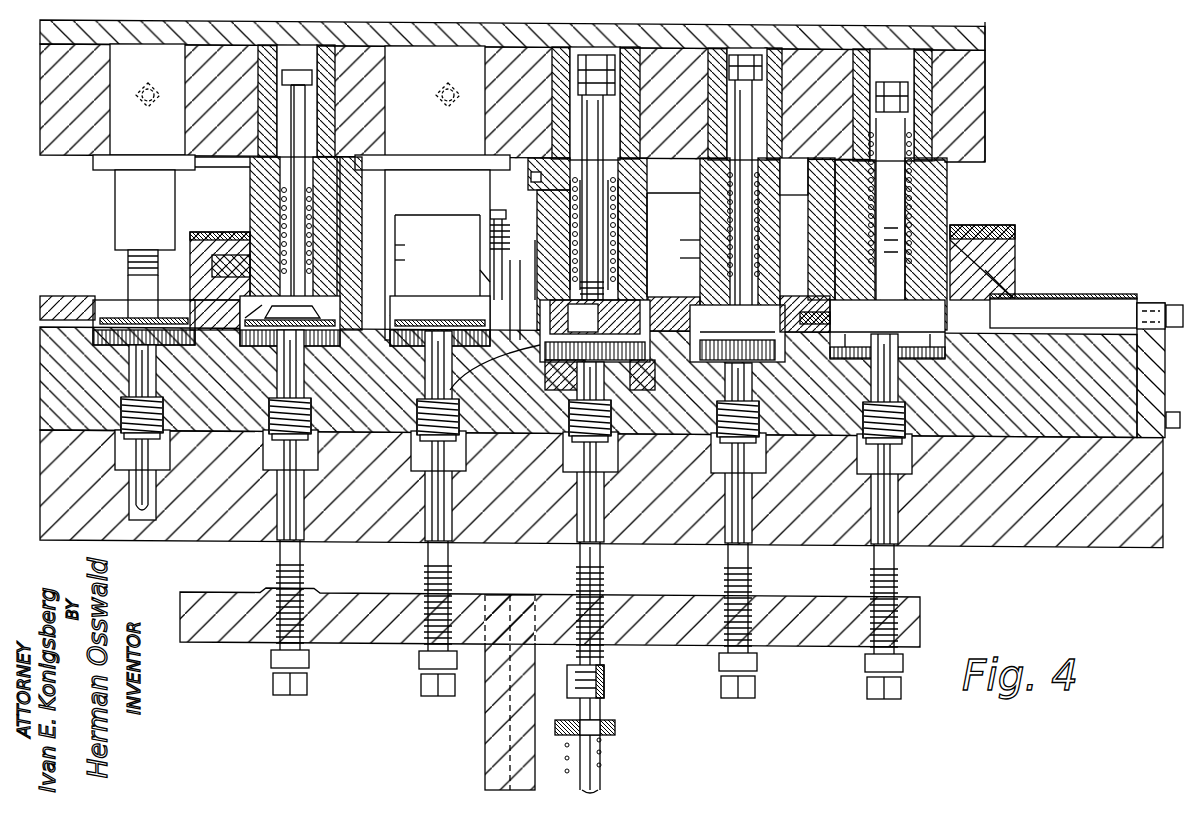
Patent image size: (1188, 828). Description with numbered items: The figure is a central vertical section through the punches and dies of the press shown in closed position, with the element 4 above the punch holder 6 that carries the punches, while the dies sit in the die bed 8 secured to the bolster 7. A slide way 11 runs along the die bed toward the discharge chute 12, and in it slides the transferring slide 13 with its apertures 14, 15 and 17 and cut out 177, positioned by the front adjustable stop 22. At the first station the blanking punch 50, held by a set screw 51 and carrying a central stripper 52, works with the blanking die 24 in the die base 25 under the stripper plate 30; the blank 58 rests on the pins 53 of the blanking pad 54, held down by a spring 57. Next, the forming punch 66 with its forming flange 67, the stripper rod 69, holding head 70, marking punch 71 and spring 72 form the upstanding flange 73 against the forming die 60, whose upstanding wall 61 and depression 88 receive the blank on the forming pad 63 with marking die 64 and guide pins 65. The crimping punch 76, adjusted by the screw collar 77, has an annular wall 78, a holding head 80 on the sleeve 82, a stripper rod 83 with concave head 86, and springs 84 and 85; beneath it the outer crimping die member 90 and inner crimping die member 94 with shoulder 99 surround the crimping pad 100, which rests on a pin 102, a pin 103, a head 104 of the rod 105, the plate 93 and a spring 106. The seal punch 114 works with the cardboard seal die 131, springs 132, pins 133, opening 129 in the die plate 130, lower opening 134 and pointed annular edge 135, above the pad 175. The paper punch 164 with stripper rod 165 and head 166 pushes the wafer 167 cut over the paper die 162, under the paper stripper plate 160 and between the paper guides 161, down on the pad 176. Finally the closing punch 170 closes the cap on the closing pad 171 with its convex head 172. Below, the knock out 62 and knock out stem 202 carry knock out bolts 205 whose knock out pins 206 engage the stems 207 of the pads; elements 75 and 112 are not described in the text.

The upper plate 4 is at (985, 45).
The punch holder 6 is at (985, 134).
The set screw 51 is at (448, 107).
The stripper rod 69 is at (747, 189).
The paper punch 164 is at (318, 196).
The stripper rod 165 is at (298, 210).
The closing punch 170 is at (144, 224).
The convex head 172 is at (140, 325).
The closing pad 171 is at (108, 320).
The paper stripper plate 160 is at (235, 236).
The paper guides 161 is at (205, 236).
The paper die 162 is at (212, 272).
The seal punch 114 is at (437, 255).
The springs 132 is at (398, 226).
The opening 129 is at (398, 246).
The rods or pins 133 is at (398, 260).
The cardboard seal die 131 is at (398, 305).
The die plate 130 is at (485, 282).
The lower opening 134 is at (400, 320).
The pointed annular edge 135 is at (478, 338).
The screw collar 77 is at (530, 185).
The crimping punch 76 is at (545, 228).
The holding head 80 is at (537, 258).
The annular wall 78 is at (535, 285).
The sleeve 82 is at (585, 200).
The stripper rod 83 is at (594, 234).
The spring 85 is at (590, 280).
The spring 84 is at (625, 245).
The spring 72 is at (722, 210).
The forming punch 66 is at (722, 237).
The forming head or flange 67 is at (722, 258).
The upstanding wall 61 is at (700, 300).
The marking punch 71 is at (742, 272).
The holding head 70 is at (795, 178).
The aperture 14 is at (835, 215).
The blanking punch 50 is at (930, 222).
The stripper plate 30 is at (972, 230).
The central stripper 52 is at (985, 232).
The blanking die 24 is at (1016, 226).
The die base 25 is at (1040, 240).
The pins 53 is at (1000, 272).
The slide way 11 is at (1060, 300).
The transferring slide 13 is at (1010, 312).
The front adjustable stop 22 is at (1170, 303).
The die bed 8 is at (588, 382).
The head 166 is at (290, 321).
The wafer or gasket member 167 is at (258, 308).
The discharge chute 12 is at (330, 306).
The crimping pad 100 is at (595, 331).
The concave head 86 is at (595, 317).
The inner crimping die member 94 is at (565, 379).
The shoulder 99 is at (642, 378).
The forming die 60 is at (758, 382).
The blank 58 is at (860, 334).
The blanking pad 54 is at (905, 342).
The spacer 75 is at (805, 314).
The aperture 15 is at (791, 300).
The cut out 177 is at (815, 327).
The aperture 17 is at (632, 343).
The bolster 7 is at (1085, 546).
The stems 207 is at (135, 378).
The knock out pins 206 is at (150, 505).
The pad 176 is at (272, 380).
The pad 175 is at (410, 445).
The block 112 is at (381, 386).
The outer crimping die member 90 is at (540, 345).
The spring 57 is at (568, 442).
The depression 88 is at (560, 362).
The marking die 64 is at (625, 354).
The forming pad 63 is at (652, 350).
The guide pins 65 is at (740, 443).
The upstanding flange 73 is at (800, 354).
The knock out bolt 205 is at (300, 582).
The knock out 62 is at (385, 620).
The knock out stem 202 is at (490, 742).
The pin 102 is at (580, 553).
The pin 103 is at (600, 585).
The head 104 is at (606, 682).
The plate 93 is at (606, 722).
The rod 105 is at (602, 757).
The spring 106 is at (598, 770).